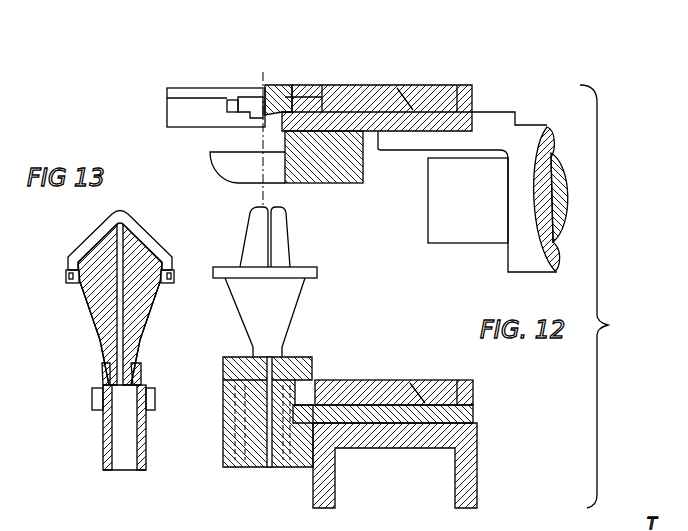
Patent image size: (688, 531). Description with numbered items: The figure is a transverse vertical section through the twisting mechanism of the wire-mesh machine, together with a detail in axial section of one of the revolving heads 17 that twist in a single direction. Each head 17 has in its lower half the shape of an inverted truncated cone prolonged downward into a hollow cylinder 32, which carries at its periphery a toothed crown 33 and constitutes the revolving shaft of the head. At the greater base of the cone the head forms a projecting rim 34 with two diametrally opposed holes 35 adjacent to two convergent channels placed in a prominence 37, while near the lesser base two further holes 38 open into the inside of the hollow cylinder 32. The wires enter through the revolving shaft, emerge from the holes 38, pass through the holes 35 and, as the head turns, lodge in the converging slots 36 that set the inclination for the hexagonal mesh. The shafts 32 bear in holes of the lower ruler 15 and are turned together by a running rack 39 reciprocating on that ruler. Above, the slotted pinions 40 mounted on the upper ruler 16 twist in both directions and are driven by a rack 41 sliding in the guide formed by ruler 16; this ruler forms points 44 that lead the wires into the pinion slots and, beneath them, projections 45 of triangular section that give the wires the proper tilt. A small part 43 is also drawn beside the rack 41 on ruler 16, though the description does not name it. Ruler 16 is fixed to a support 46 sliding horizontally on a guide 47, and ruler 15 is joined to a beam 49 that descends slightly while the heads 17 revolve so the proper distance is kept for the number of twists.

In FIG. 12, the ruler 15 is at (236, 440).
In FIG. 12, the ruler 16 is at (325, 152).
In FIG. 12, the revolving head 17 is at (281, 308).
In FIG. 13, the revolving head 17 is at (137, 329).
In FIG. 13, the hollow cylinder 32 is at (146, 432).
In FIG. 13, the toothed crown 33 is at (155, 397).
In FIG. 13, the projecting rim 34 is at (173, 275).
In FIG. 13, the holes 35 is at (72, 284).
In FIG. 12, the converging slots 36 is at (265, 236).
In FIG. 13, the converging slots 36 is at (143, 239).
In FIG. 12, the prominence 37 is at (279, 241).
In FIG. 13, the prominence 37 is at (101, 251).
In FIG. 13, the holes 38 is at (102, 371).
In FIG. 12, the running rack 39 is at (344, 393).
In FIG. 12, the slotted pinion 40 is at (277, 93).
In FIG. 12, the rack 41 is at (352, 93).
In FIG. 12, the pin key 43 is at (251, 105).
In FIG. 12, the points 44 is at (183, 107).
In FIG. 12, the projections of triangular section 45 is at (229, 166).
In FIG. 12, the support 46 is at (528, 261).
In FIG. 12, the guide 47 is at (464, 232).
In FIG. 12, the beam 49 is at (397, 448).